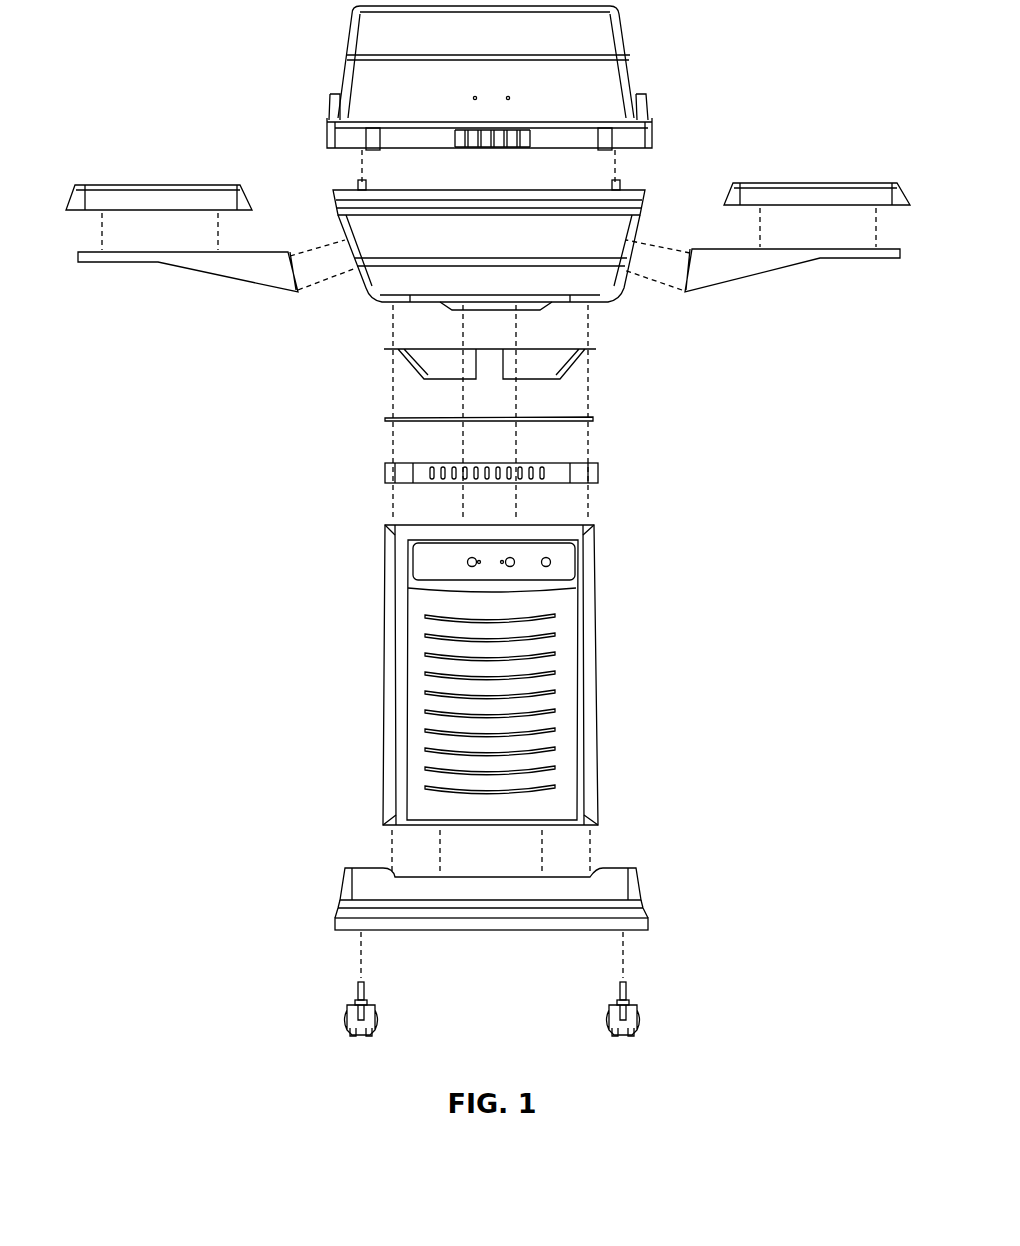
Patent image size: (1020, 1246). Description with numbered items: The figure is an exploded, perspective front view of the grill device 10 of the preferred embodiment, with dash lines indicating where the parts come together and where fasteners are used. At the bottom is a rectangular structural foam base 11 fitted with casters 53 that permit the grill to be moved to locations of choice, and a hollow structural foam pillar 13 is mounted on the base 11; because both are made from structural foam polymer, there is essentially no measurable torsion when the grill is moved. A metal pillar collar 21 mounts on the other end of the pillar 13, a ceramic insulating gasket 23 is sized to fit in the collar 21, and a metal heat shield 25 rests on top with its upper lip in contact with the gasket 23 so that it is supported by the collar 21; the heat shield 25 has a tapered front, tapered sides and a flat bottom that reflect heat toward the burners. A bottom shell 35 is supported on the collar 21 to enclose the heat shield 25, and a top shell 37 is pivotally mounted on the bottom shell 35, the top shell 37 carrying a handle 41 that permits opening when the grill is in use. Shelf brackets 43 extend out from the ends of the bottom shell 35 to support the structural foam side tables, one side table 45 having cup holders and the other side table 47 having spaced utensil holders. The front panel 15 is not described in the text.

The device 10 is at (476, 566).
The base 11 is at (647, 878).
The pillar 13 is at (478, 675).
The front panel 15 is at (536, 705).
The pillar collar 21 is at (600, 479).
The insulating gasket 23 is at (598, 419).
The heat shield 25 is at (572, 367).
The bottom shell 35 is at (375, 295).
The top shell 37 is at (340, 62).
The handle 41 is at (564, 129).
The shelf bracket 43 is at (181, 270).
The side table 45 is at (197, 182).
The side table 47 is at (782, 180).
The casters 53 is at (345, 1010).